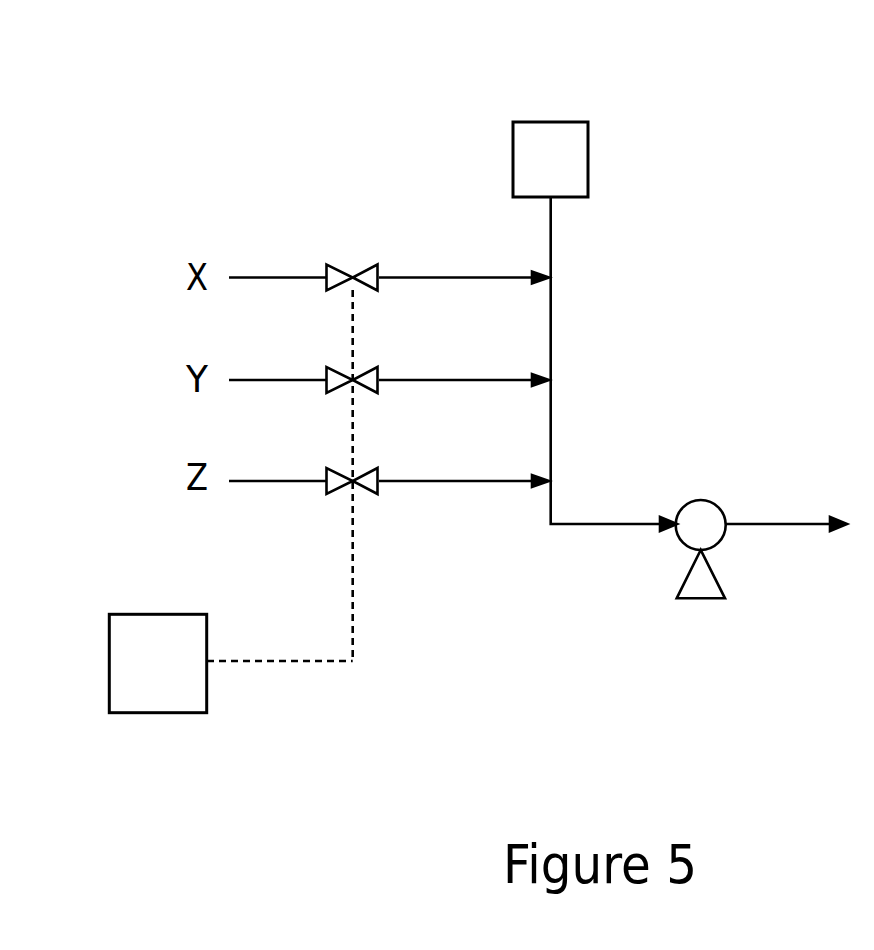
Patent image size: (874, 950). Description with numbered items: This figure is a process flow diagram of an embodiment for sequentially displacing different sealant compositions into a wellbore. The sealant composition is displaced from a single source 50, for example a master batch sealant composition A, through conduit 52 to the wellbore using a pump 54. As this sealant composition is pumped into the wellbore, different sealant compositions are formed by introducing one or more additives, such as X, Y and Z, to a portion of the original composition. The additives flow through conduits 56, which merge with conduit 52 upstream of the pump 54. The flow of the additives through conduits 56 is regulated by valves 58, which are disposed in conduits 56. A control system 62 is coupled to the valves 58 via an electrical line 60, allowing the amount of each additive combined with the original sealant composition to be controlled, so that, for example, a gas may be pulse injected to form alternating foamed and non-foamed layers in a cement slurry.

The single source 50 is at (579, 104).
The conduit 52 is at (600, 409).
The pump 54 is at (761, 499).
The conduits 56 is at (443, 230).
The valves 58 is at (353, 230).
The electrical line 60 is at (280, 475).
The control system 62 is at (180, 684).